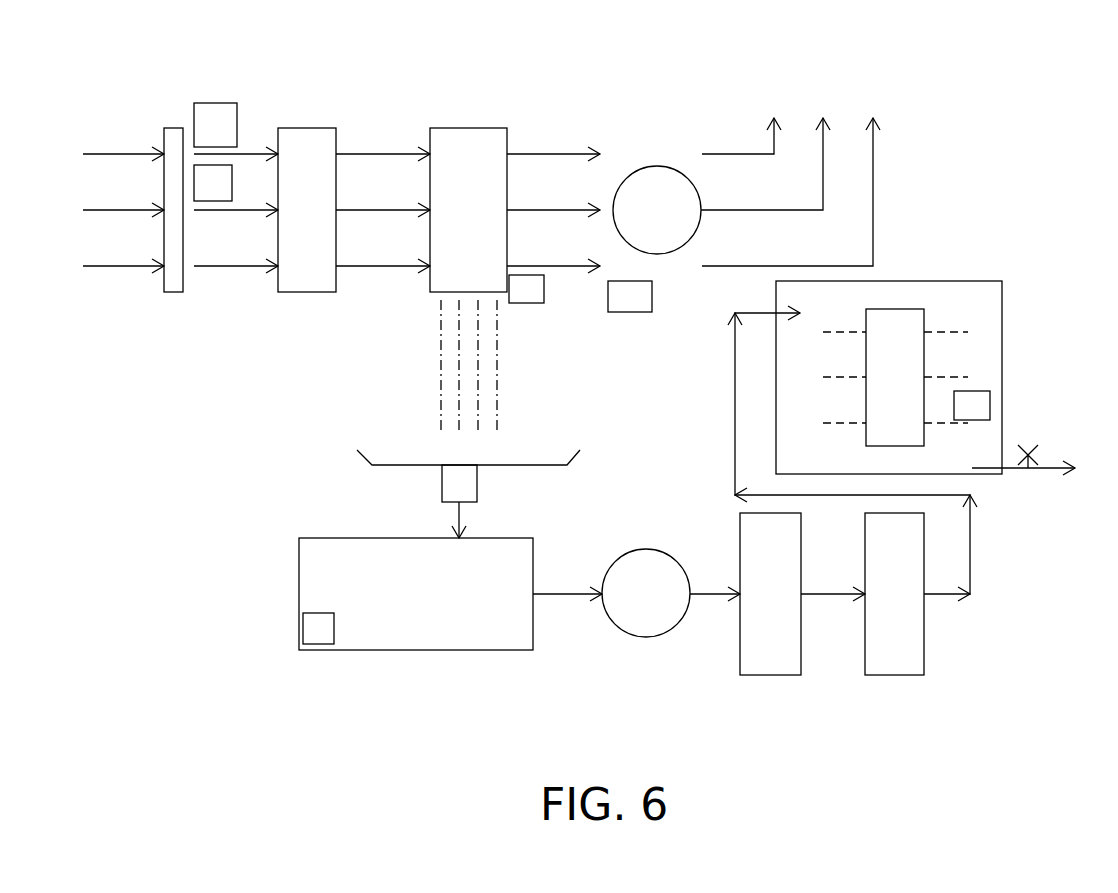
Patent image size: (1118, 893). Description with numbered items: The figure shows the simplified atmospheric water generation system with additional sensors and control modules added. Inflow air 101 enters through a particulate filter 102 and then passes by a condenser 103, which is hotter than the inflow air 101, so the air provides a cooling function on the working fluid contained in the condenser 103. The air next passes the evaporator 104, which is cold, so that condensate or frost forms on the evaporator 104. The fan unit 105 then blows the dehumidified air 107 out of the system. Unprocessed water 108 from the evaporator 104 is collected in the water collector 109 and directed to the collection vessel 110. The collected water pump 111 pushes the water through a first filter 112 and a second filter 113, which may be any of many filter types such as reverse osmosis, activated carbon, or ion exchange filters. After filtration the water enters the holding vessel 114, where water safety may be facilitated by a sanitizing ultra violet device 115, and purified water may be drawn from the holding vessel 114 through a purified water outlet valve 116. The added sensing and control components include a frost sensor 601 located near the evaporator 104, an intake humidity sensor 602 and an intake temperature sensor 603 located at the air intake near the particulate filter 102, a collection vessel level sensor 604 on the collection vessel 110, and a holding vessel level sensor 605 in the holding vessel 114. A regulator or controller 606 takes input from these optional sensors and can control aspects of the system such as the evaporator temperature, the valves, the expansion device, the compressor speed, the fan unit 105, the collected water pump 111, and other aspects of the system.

The inflow air 101 is at (247, 266).
The particulate filter 102 is at (178, 128).
The condenser 103 is at (307, 128).
The evaporator 104 is at (468, 128).
The fan unit 105 is at (657, 166).
The dehumidified air 107 is at (560, 154).
The unprocessed water 108 is at (497, 400).
The water collector 109 is at (418, 465).
The collection vessel 110 is at (425, 650).
The collected water pump 111 is at (656, 550).
The first filter 112 is at (770, 675).
The second filter 113 is at (893, 675).
The holding vessel 114 is at (967, 281).
The sanitizing ultra violet (uv) device 115 is at (866, 400).
The purified water outlet valve 116 is at (1030, 450).
The frost sensor 601 is at (544, 292).
The intake humidity sensor 602 is at (215, 103).
The intake temperature sensor 603 is at (232, 165).
The collection vessel level sensor 604 is at (318, 648).
The holding vessel level sensor 605 is at (985, 391).
The regulator or controller 606 is at (652, 300).